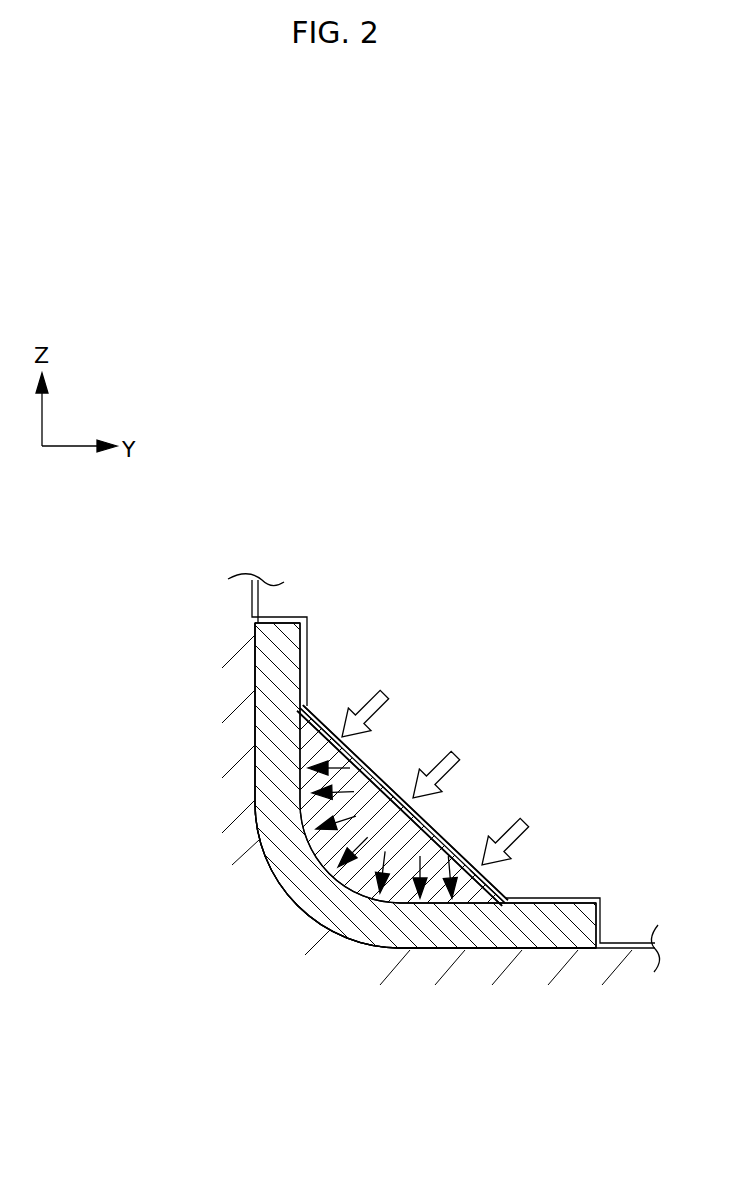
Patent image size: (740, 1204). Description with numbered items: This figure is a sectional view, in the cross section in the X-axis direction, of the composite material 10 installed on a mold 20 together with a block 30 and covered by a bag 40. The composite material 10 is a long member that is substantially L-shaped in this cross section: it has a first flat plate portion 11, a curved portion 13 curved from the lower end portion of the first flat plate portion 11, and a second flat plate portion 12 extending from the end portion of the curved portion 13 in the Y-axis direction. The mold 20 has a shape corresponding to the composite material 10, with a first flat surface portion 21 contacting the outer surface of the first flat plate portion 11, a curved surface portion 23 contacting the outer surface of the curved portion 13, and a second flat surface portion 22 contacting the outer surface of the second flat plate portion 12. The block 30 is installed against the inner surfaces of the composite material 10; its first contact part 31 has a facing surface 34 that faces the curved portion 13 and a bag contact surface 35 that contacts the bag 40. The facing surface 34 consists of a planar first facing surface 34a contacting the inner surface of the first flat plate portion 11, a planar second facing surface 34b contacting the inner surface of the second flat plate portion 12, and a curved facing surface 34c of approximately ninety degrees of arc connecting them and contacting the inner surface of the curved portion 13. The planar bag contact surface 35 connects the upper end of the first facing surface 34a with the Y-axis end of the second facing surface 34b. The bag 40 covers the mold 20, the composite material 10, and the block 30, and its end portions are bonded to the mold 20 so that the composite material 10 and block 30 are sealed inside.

The composite material 10 is at (235, 833).
The first flat plate portion 11 is at (257, 740).
The second flat plate portion 12 is at (528, 935).
The curved portion 13 is at (307, 905).
The mold 20 is at (346, 982).
The first flat surface portion 21 is at (250, 665).
The second flat surface portion 22 is at (443, 950).
The curved surface portion 23 is at (337, 930).
The block 30 is at (460, 840).
The first contact part 31 is at (405, 790).
The facing surface 34 is at (300, 872).
The first facing surface 34a is at (325, 708).
The second facing surface 34b is at (507, 897).
The curved facing surface 34c is at (385, 820).
The bag contact surface 35 is at (392, 793).
The bag 40 is at (292, 615).